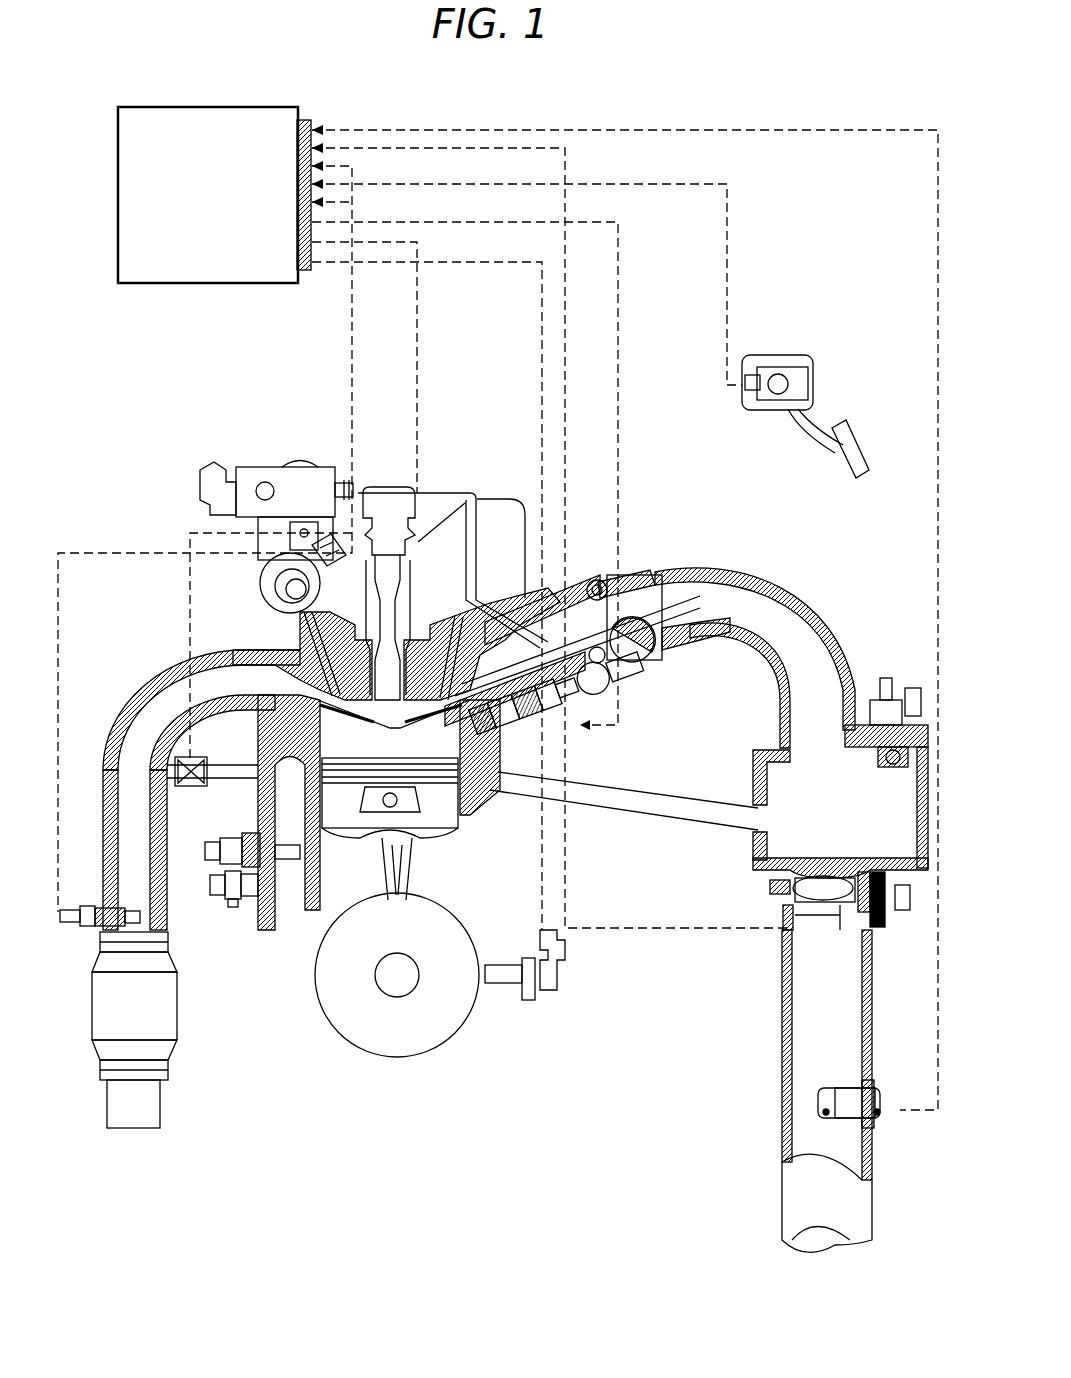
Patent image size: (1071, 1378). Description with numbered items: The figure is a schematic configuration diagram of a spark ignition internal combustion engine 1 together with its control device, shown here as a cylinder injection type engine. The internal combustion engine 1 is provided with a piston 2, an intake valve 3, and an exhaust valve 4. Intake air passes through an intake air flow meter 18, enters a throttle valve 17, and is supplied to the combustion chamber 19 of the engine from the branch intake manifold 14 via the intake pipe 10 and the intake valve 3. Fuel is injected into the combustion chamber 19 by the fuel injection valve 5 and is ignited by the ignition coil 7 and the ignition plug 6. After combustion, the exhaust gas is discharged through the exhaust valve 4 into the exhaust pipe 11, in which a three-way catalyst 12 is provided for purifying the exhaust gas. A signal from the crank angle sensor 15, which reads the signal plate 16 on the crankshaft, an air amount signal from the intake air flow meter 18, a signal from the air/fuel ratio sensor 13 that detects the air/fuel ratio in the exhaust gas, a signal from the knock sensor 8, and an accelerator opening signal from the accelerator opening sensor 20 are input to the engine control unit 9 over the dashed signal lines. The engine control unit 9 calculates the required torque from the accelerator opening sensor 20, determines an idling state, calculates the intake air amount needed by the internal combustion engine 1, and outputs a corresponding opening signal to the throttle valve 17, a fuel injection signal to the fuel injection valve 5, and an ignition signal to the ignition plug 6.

The internal combustion engine 1 is at (483, 780).
The piston 2 is at (450, 822).
The intake valve 3 is at (447, 627).
The exhaust valve 4 is at (343, 712).
The fuel injection valve 5 is at (592, 730).
The ignition plug 6 is at (398, 712).
The ignition coil 7 is at (392, 500).
The knock sensor 8 is at (240, 900).
The engine control unit 9 is at (205, 262).
The intake pipe 10 is at (565, 598).
The exhaust pipe 11 is at (135, 700).
The three-way catalyst 12 is at (165, 1018).
The air/fuel ratio sensor 13 is at (82, 925).
The intake manifold 14 is at (775, 740).
The crank angle sensor 15 is at (560, 975).
The signal plate 16 is at (455, 1008).
The throttle valve 17 is at (897, 950).
The intake air flow meter 18 is at (892, 1118).
The combustion chamber 19 is at (432, 790).
The accelerator opening sensor 20 is at (780, 355).